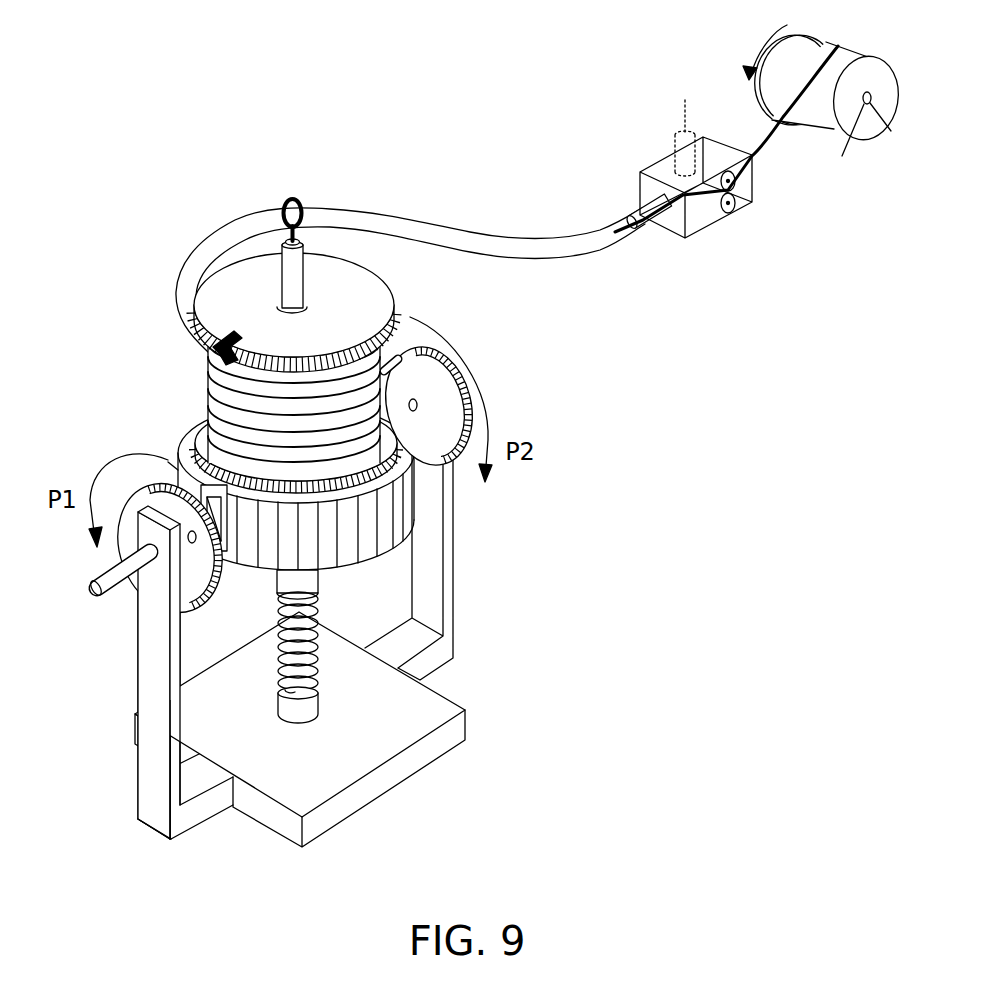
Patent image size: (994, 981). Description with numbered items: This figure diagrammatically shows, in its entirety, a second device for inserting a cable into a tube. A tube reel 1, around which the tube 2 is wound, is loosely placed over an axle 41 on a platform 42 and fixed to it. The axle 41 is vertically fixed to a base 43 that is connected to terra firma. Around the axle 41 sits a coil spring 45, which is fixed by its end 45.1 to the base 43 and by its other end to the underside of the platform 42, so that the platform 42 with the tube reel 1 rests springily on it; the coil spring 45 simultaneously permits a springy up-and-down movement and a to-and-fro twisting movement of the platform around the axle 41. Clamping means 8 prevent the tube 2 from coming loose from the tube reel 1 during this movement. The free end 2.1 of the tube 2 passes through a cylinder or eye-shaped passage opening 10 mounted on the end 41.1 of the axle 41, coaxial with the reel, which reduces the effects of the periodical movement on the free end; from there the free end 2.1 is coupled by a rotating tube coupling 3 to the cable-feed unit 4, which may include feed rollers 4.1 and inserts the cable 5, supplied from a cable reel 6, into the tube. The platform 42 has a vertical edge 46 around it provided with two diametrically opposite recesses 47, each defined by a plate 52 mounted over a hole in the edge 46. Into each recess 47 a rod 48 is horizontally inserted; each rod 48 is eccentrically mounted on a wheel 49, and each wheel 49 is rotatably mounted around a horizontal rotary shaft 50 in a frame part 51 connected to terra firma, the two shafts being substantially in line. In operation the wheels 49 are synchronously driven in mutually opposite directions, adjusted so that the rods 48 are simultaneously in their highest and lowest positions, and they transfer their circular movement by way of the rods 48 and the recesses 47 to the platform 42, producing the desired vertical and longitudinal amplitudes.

The tube reel 1 is at (210, 295).
The tube 2 is at (207, 393).
The free end of the tube 2.1 is at (537, 240).
The rotating tube coupling 3 is at (634, 226).
The cable-feed unit 4 is at (707, 231).
The feed rollers 4.1 is at (732, 206).
The cable 5 is at (754, 153).
The cable reel 6 is at (878, 70).
The clamping means 8 is at (196, 328).
The passage opening 10 is at (300, 199).
The axle 41 is at (296, 290).
The end of the axle 41.1 is at (299, 242).
The platform 42 is at (388, 470).
The base 43 is at (297, 712).
The coil spring 45 is at (317, 657).
The end of the coil spring 45.1 is at (284, 692).
The vertical edge 46 is at (345, 537).
The recess 47 is at (221, 531).
The rod 48 is at (392, 376).
The wheel 49 is at (428, 385).
The horizontal rotary shaft 50 is at (418, 405).
The frame part 51 is at (448, 569).
The plate 52 is at (168, 461).